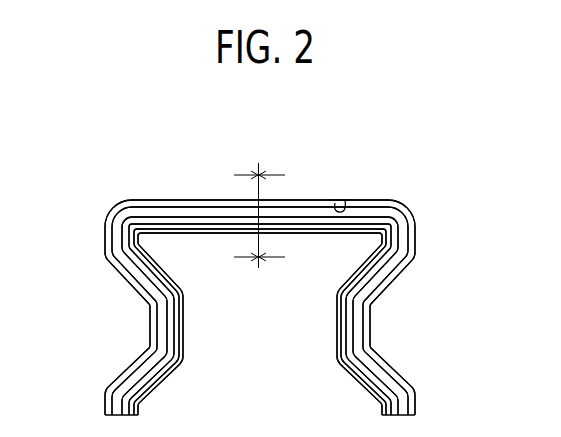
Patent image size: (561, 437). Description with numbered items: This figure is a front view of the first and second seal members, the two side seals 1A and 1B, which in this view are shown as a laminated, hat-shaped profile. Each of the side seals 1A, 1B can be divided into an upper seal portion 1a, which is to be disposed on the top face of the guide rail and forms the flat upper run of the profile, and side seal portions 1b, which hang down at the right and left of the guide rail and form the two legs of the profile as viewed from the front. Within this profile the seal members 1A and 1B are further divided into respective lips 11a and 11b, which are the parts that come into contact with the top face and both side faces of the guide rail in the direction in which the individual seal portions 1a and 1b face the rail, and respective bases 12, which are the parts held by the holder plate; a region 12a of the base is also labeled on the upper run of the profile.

The side seal 1A is at (120, 183).
The side seal 1B is at (259, 267).
The upper seal portion 1a is at (163, 204).
The side seal portion 1b is at (146, 300).
The lip 11a is at (208, 241).
The lip 11b is at (260, 316).
The base 12 is at (200, 194).
The top surface of flat portion 12a is at (345, 200).